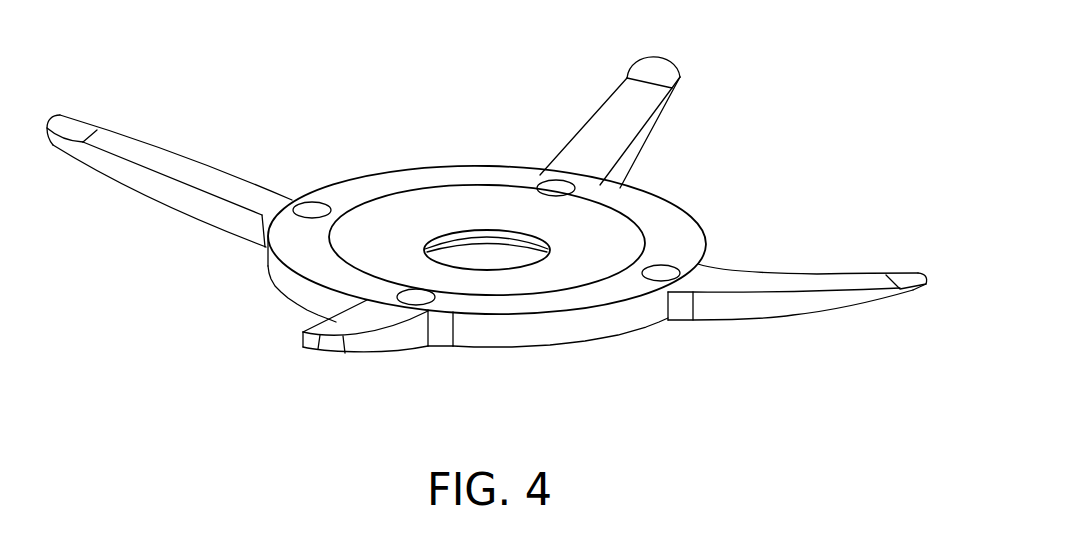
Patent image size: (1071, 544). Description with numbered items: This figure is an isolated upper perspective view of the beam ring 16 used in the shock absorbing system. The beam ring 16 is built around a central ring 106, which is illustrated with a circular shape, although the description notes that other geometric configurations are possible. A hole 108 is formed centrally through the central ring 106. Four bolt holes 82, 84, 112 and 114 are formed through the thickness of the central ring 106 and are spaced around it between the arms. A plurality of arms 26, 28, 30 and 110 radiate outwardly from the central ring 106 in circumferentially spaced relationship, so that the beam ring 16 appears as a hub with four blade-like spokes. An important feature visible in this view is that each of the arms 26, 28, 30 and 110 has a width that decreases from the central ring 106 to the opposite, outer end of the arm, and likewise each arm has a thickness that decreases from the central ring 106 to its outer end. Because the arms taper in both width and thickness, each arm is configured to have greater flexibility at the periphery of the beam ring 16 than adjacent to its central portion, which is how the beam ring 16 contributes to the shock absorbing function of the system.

The beam ring 16 is at (752, 182).
The arm 26 is at (793, 313).
The arm 28 is at (376, 354).
The arm 30 is at (177, 160).
The bolt hole 82 is at (312, 212).
The bolt hole 84 is at (673, 267).
The central ring 106 is at (420, 202).
The hole 108 is at (472, 256).
The arm 110 is at (652, 123).
The bolt hole 112 is at (552, 183).
The bolt hole 114 is at (431, 304).